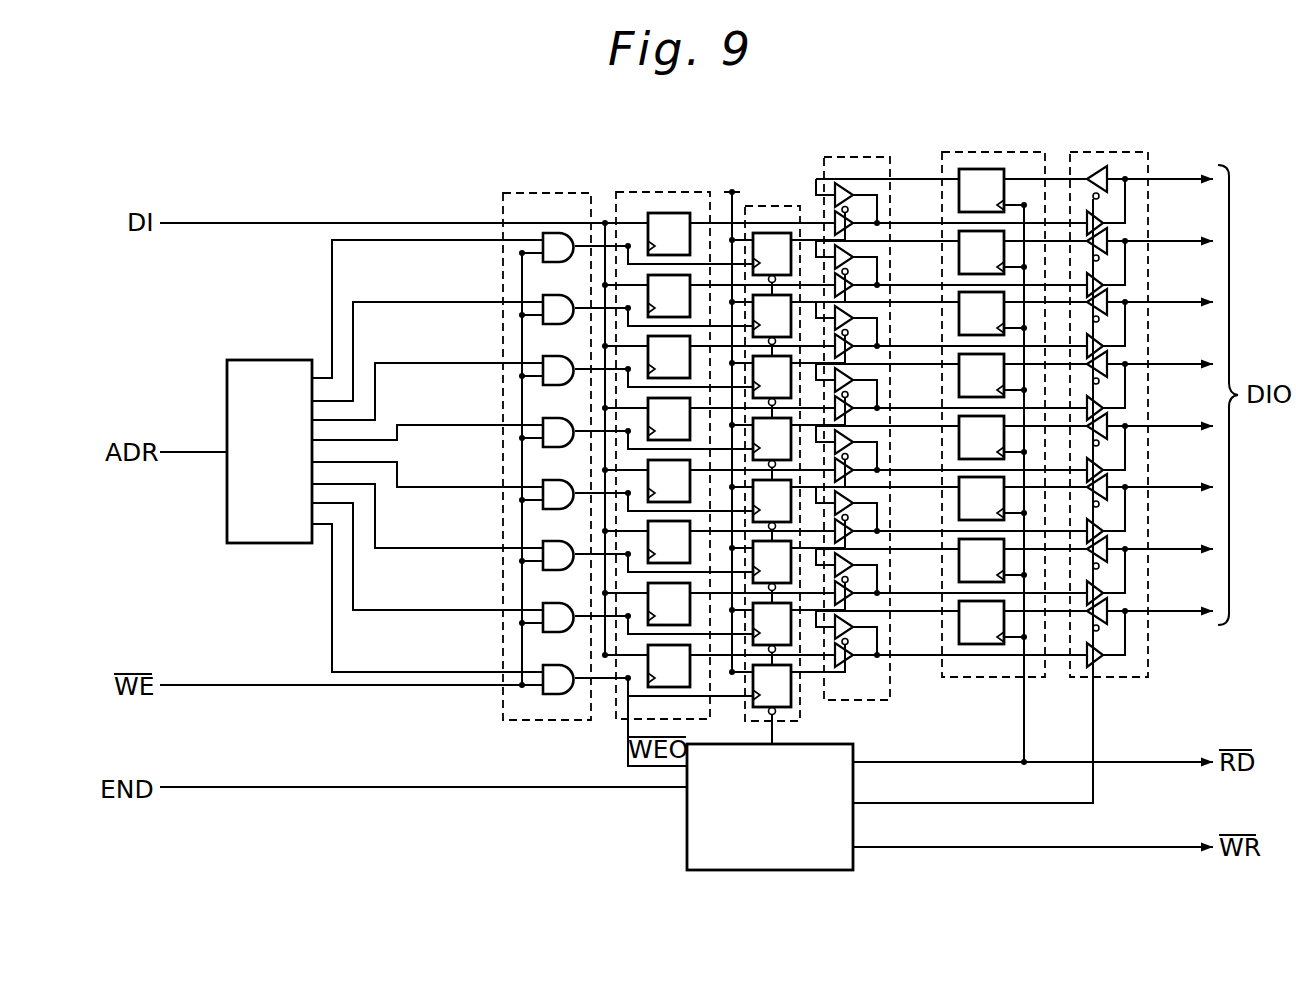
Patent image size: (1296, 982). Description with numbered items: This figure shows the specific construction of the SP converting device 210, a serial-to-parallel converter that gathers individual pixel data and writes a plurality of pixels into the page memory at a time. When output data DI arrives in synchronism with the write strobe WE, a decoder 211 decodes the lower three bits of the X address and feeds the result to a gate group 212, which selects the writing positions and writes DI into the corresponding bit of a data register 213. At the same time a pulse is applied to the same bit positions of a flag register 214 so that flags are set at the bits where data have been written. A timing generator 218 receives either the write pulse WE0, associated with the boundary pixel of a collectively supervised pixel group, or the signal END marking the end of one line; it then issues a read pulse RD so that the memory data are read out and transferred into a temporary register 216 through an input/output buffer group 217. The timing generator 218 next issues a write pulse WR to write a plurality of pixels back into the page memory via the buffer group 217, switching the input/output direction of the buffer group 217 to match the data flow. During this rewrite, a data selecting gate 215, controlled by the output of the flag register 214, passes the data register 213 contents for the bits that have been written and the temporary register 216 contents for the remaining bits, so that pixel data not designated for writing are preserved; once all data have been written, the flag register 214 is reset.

The SP converting device 210 is at (490, 175).
The decoder 211 is at (266, 360).
The gate group 212 is at (558, 192).
The data register 213 is at (661, 191).
The flag register 214 is at (770, 206).
The data selecting gate 215 is at (870, 157).
The temporary register 216 is at (992, 153).
The input/output buffer group 217 is at (1105, 152).
The timing generator 218 is at (687, 838).